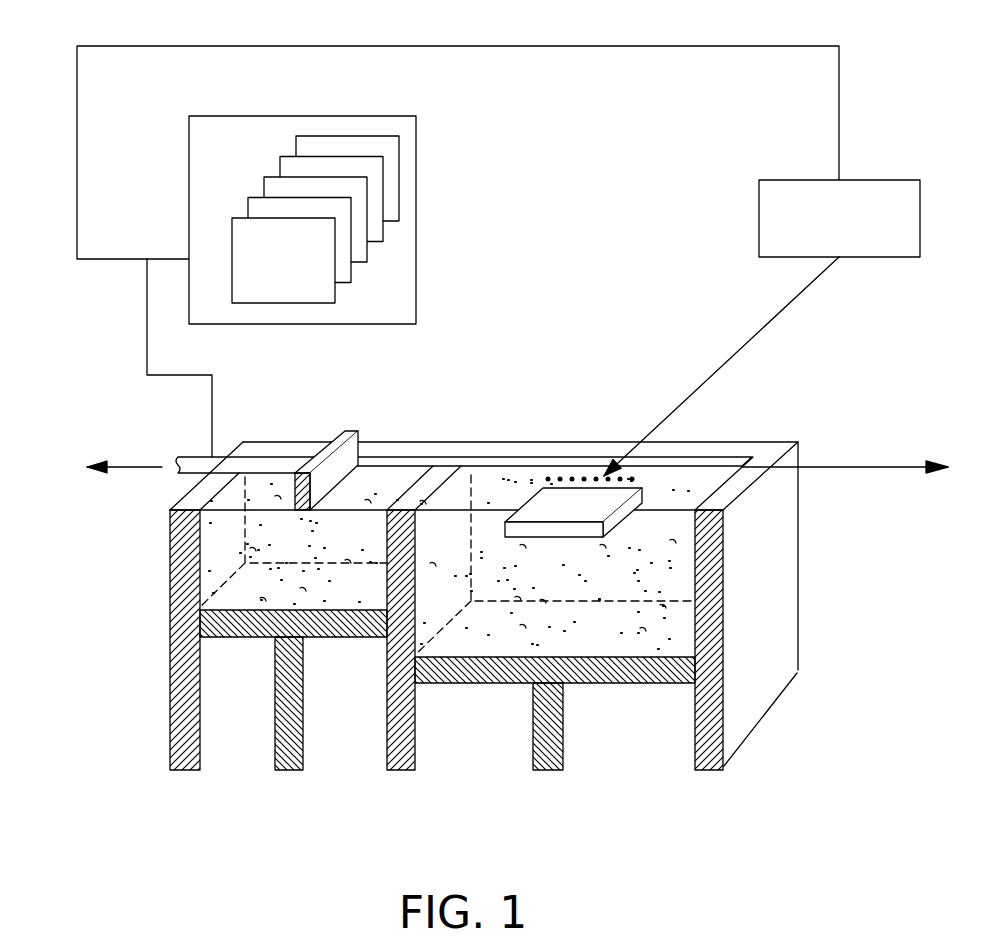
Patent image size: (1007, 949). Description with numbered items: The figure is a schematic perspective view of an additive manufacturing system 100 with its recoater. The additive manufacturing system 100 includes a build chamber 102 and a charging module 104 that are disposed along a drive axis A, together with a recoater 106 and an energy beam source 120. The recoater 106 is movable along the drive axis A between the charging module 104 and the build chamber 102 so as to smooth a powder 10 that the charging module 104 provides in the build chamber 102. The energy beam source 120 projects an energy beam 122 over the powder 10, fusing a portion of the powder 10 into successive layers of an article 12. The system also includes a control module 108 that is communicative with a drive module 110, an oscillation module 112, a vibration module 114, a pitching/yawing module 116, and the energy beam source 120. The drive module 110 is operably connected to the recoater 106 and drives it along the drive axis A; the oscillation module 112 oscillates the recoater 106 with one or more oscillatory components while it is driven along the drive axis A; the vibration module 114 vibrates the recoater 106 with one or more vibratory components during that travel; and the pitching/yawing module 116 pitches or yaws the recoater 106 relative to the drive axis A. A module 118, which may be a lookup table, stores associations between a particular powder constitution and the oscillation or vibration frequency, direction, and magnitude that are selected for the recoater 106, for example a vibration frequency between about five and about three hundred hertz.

The powder 10 is at (620, 557).
The article 12 is at (557, 492).
The additive manufacturing system 100 is at (489, 607).
The build chamber 102 is at (638, 748).
The charging module 104 is at (330, 752).
The recoater 106 is at (390, 407).
The control module 108 is at (458, 251).
The drive module 110 is at (263, 268).
The oscillation module 112 is at (337, 282).
The vibration module 114 is at (368, 198).
The pitching/yawing module 116 is at (372, 155).
The module 118 is at (327, 136).
The energy beam source 120 is at (818, 226).
The energy beam 122 is at (760, 323).
The drive axis A is at (863, 460).